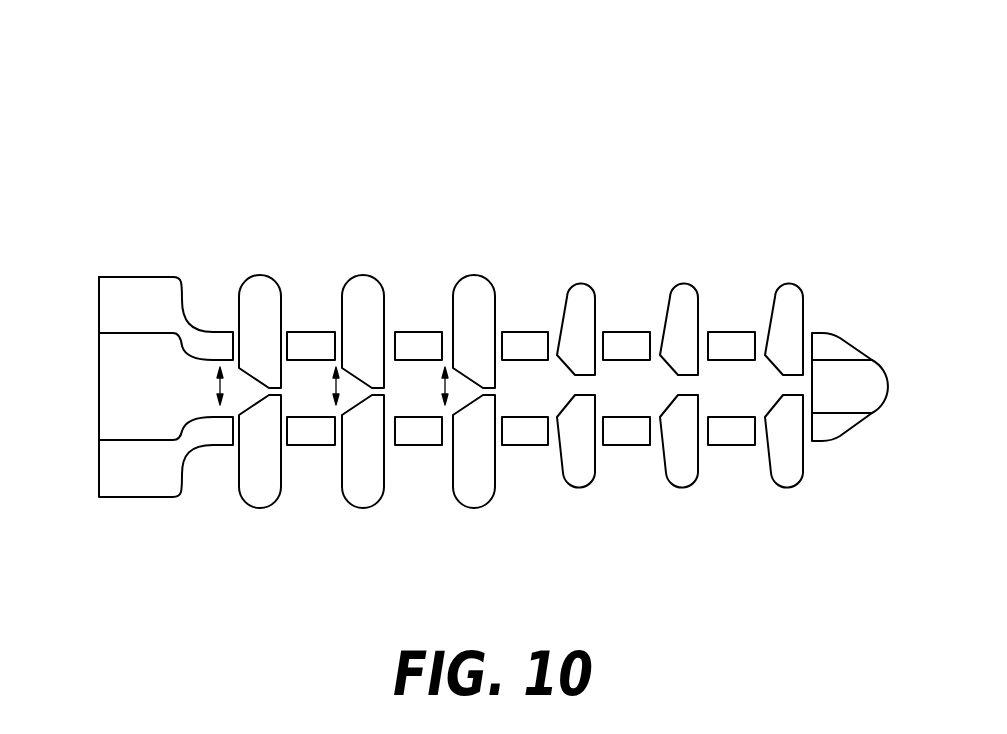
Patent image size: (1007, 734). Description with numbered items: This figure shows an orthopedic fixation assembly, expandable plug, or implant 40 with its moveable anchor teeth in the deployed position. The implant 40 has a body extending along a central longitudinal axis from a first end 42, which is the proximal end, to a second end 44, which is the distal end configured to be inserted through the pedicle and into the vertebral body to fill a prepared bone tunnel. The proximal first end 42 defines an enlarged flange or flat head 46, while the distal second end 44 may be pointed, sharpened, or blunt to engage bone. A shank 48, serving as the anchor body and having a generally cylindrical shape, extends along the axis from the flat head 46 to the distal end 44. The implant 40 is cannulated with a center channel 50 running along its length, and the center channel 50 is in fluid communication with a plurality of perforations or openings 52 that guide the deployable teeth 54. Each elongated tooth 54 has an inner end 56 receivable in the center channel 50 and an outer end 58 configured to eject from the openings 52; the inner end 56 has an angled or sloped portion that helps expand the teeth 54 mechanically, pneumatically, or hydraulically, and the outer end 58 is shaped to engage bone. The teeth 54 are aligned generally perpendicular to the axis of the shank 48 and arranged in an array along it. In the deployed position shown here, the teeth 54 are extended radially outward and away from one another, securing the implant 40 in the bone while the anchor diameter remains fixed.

The implant 40 is at (238, 106).
The first end 42 is at (99, 296).
The second end 44 is at (887, 373).
The flat head 46 is at (165, 277).
The shank 48 is at (413, 331).
The center channel 50 is at (515, 375).
The openings 52 is at (290, 332).
The teeth 54 is at (266, 277).
The inner end 56 is at (680, 376).
The outer end 58 is at (677, 284).